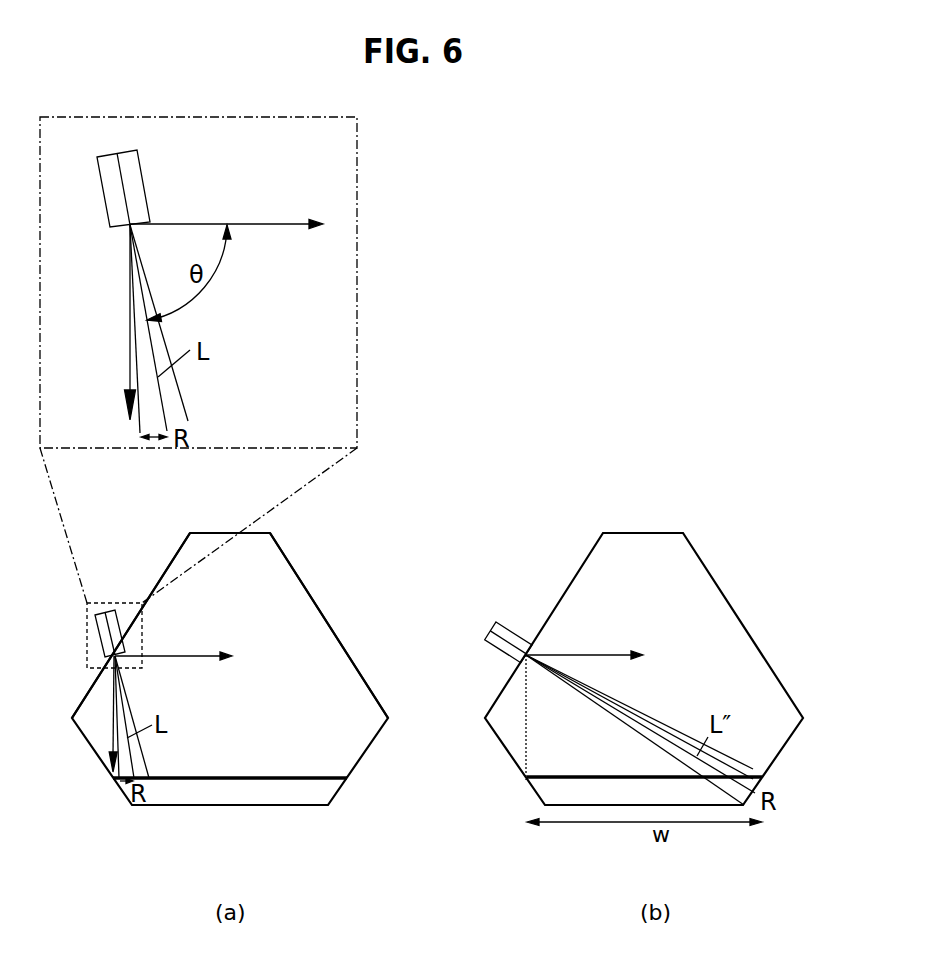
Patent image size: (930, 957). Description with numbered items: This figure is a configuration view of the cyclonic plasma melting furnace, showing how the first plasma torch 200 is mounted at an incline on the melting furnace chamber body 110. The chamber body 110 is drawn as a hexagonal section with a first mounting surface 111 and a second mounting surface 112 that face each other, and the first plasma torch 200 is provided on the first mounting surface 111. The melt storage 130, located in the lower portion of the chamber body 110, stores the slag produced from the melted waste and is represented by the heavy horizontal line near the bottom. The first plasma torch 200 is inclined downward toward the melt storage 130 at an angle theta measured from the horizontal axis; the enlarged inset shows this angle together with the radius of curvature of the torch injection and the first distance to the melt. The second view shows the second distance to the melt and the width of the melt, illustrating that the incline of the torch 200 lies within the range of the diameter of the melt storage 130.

The melting furnace chamber body 110 is at (305, 550).
The first mounting surface 111 is at (90, 686).
The second mounting surface 112 is at (326, 619).
The melt storage 130 is at (237, 797).
The first plasma torch 200 is at (113, 610).